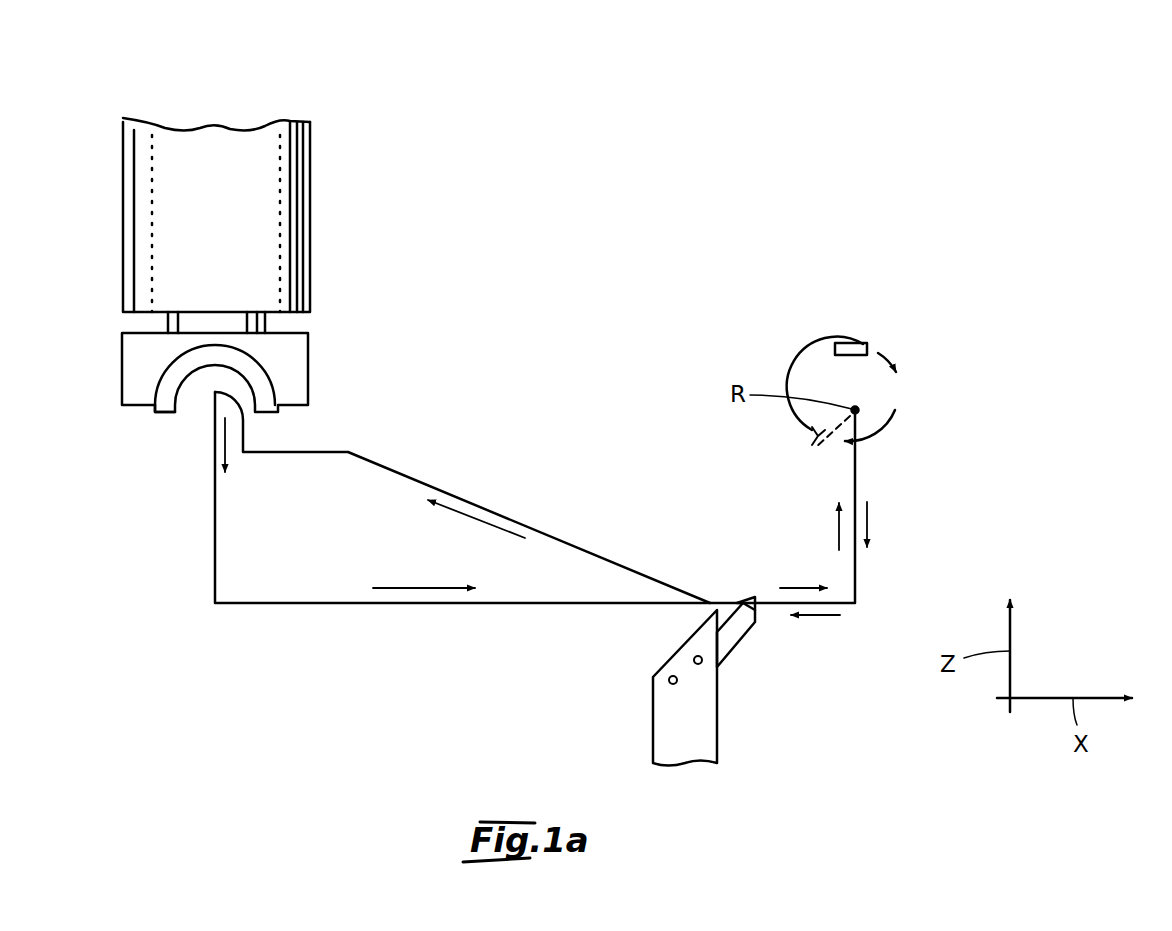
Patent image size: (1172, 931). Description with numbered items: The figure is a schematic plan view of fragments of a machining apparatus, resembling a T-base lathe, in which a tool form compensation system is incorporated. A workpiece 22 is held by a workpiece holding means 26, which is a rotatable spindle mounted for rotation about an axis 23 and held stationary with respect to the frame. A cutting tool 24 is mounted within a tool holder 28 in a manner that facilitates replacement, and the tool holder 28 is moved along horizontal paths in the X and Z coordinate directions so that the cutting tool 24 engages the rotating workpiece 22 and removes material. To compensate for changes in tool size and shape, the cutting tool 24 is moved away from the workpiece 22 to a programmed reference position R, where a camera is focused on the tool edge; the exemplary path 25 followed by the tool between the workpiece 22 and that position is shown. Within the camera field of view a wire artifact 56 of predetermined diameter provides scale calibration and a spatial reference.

The workpiece 22 is at (160, 412).
The axis 23 is at (216, 43).
The cutting tool 24 is at (753, 608).
The path 25 is at (497, 510).
The workpiece holding means 26 is at (310, 360).
The tool holder 28 is at (653, 683).
The wire artifact 56 is at (897, 372).